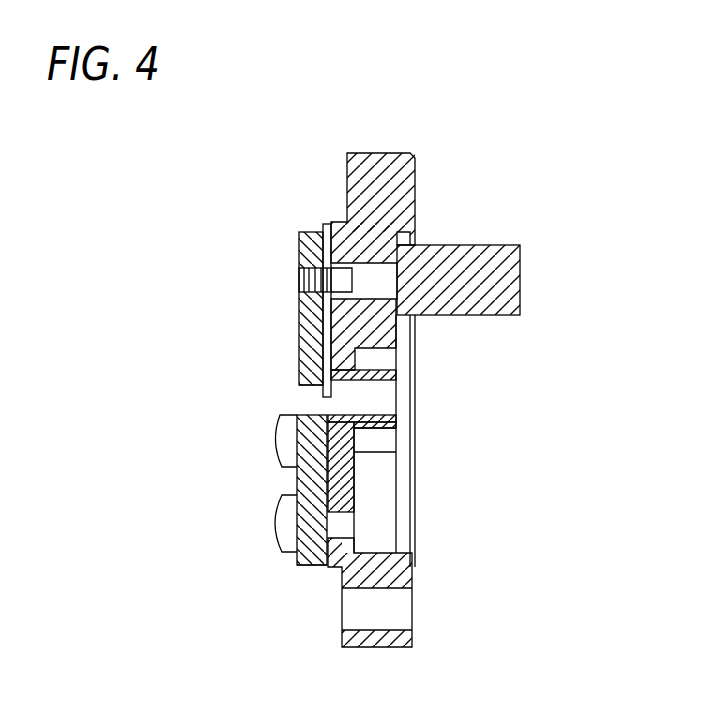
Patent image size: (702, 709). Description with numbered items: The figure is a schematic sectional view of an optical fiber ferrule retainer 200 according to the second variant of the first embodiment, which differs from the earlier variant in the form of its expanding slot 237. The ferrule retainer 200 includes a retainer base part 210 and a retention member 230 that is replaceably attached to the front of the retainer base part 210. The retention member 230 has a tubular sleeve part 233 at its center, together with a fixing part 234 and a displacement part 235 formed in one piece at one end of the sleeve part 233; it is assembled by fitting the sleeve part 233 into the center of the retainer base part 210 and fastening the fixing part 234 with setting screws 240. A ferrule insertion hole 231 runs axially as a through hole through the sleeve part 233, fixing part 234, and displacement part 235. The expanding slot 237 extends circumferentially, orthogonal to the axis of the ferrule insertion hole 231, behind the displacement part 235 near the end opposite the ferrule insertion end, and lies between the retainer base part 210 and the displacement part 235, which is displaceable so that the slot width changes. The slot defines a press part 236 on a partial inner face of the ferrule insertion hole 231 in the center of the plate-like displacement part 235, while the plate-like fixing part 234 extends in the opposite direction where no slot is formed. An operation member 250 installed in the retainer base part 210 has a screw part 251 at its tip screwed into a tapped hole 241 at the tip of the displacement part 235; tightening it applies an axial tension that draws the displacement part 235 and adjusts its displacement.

The ferrule retainer 200 is at (265, 192).
The retainer base part 210 is at (410, 152).
The operation member 250 is at (462, 245).
The expanding slot 237 is at (327, 227).
The displacement part 235 is at (298, 340).
The tapped hole 241 is at (300, 272).
The screw part 251 is at (300, 281).
The press part 236 is at (298, 385).
The sleeve part 233 is at (396, 381).
The ferrule insertion hole 231 is at (383, 400).
The fixing part 234 is at (295, 486).
The setting screws 240 is at (272, 525).
The retention member 230 is at (300, 572).